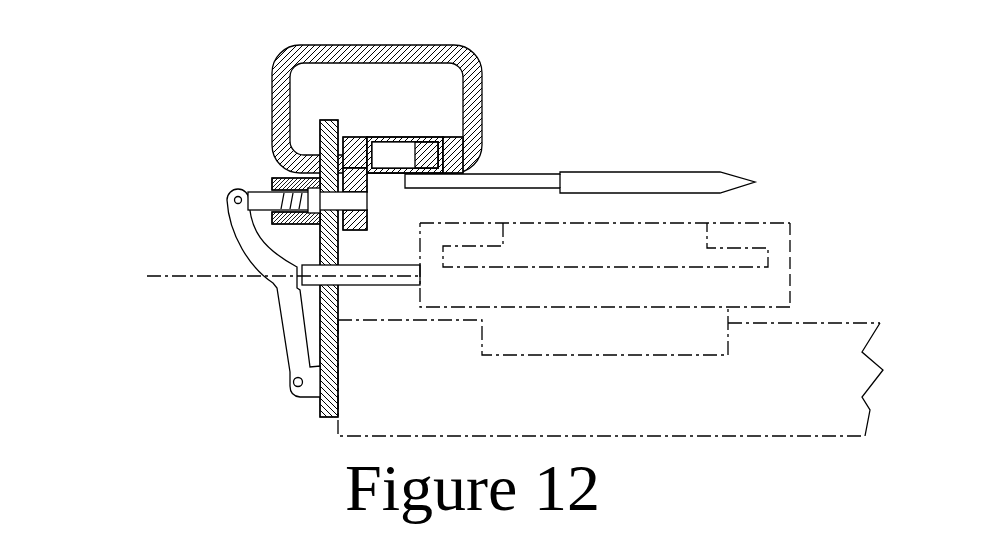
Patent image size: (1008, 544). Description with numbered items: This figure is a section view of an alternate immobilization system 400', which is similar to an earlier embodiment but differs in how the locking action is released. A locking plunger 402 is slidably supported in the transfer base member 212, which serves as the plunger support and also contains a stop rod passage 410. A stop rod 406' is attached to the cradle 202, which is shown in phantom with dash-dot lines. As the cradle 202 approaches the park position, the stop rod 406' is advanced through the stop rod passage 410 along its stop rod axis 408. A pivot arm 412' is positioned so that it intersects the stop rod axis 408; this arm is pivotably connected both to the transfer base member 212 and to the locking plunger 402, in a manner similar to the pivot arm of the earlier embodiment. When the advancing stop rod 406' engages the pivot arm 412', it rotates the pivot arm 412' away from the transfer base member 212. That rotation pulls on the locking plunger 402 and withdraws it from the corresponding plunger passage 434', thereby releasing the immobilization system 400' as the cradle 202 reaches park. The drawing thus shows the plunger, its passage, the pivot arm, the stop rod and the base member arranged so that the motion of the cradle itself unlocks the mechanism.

The immobilization system 400' is at (97, 123).
The locking plunger 402 is at (244, 178).
The pivot arm 412' is at (205, 293).
The stop rod axis 408 is at (221, 323).
The stop rod passage 410 is at (247, 344).
The transfer base member 212 is at (246, 288).
The plunger passage 434' is at (561, 203).
The cradle 202 is at (644, 253).
The stop rod 406' is at (415, 335).